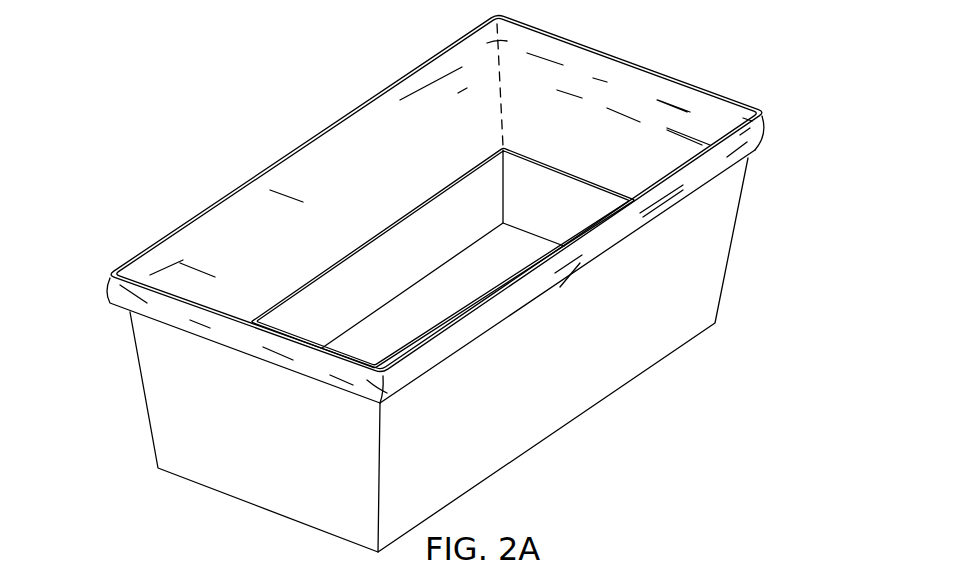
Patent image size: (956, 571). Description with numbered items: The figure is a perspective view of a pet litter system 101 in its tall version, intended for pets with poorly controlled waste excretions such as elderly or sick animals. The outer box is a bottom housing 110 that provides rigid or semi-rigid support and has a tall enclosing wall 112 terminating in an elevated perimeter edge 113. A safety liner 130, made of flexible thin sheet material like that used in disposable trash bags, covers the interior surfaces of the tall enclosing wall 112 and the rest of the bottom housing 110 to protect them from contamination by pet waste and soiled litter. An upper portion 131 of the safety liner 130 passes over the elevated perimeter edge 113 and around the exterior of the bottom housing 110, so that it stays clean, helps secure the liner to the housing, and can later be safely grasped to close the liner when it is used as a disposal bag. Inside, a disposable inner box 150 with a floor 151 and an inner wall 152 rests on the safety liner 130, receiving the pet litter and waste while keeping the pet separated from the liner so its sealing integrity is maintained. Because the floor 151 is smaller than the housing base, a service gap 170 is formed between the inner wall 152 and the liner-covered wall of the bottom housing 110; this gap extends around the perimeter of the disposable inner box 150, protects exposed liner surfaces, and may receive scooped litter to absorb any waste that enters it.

The pet litter system 101 is at (188, 60).
The bottom housing 110 is at (122, 413).
The tall enclosing wall 112 is at (727, 192).
The elevated perimeter edge 113 is at (765, 112).
The safety liner 130 is at (357, 152).
The upper portion 131 is at (172, 313).
The disposable inner box 150 is at (483, 217).
The floor 151 is at (465, 283).
The inner wall 152 is at (533, 190).
The service gap 170 is at (518, 150).